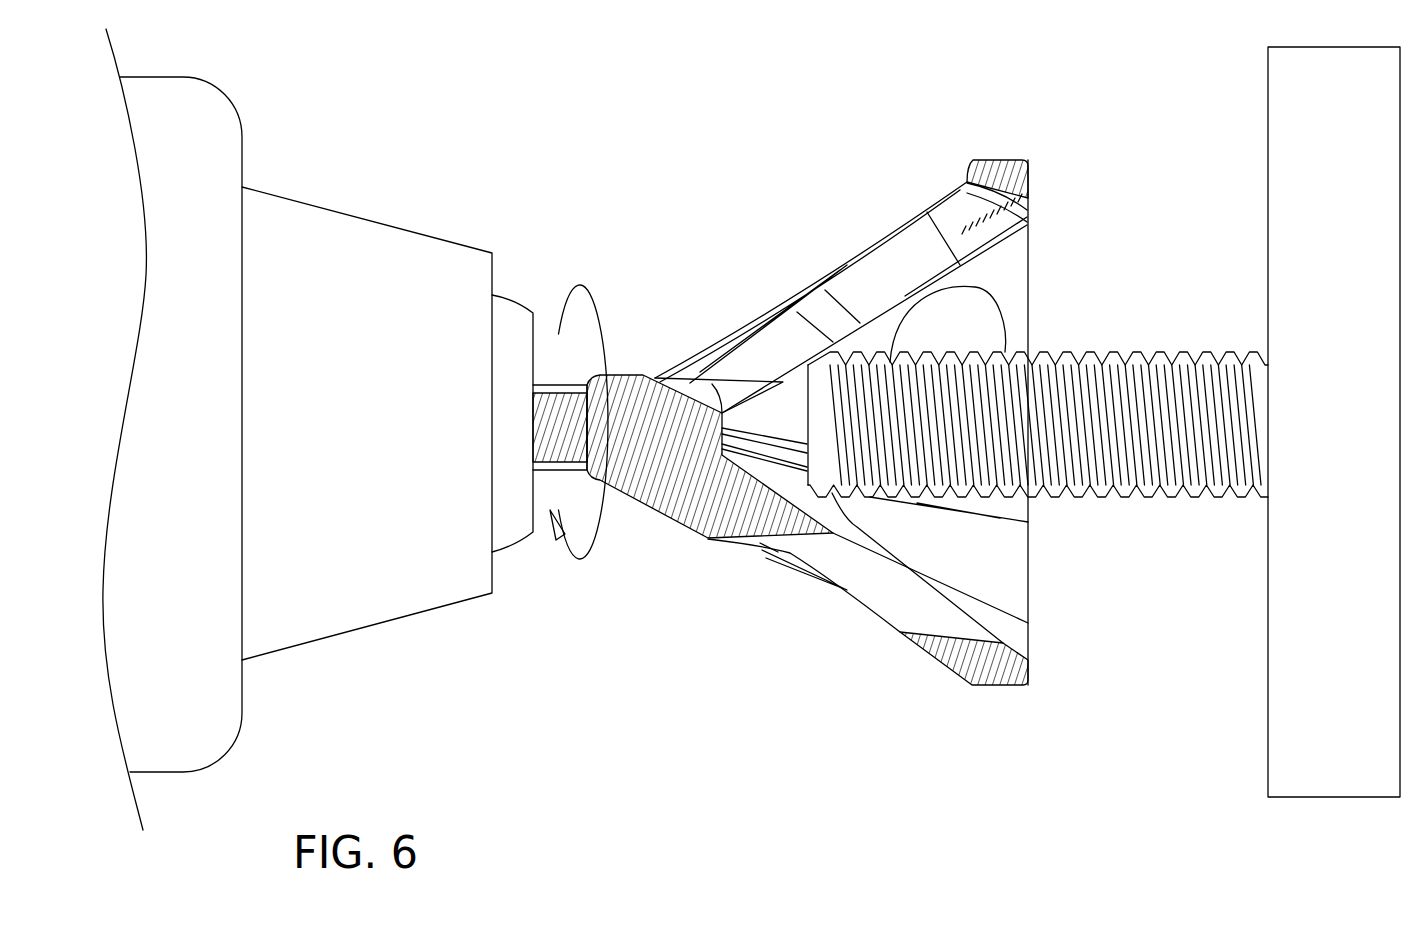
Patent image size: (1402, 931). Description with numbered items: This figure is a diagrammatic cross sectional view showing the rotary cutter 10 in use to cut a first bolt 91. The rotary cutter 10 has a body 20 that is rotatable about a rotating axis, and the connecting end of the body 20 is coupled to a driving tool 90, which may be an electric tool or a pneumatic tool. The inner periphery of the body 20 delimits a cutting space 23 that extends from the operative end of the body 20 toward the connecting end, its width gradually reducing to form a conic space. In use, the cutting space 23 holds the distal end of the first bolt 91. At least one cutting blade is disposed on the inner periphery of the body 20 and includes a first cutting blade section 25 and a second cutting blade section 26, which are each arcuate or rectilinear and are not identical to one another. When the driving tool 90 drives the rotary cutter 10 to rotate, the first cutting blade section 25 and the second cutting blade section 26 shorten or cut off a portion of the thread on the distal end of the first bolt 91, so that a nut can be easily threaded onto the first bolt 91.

The rotary cutter 10 is at (837, 402).
The body 20 is at (655, 365).
The cutting space 23 is at (988, 542).
The first cutting blade section 25 is at (778, 373).
The second cutting blade section 26 is at (918, 302).
The driving tool 90 is at (387, 262).
The first bolt 91 is at (1155, 372).